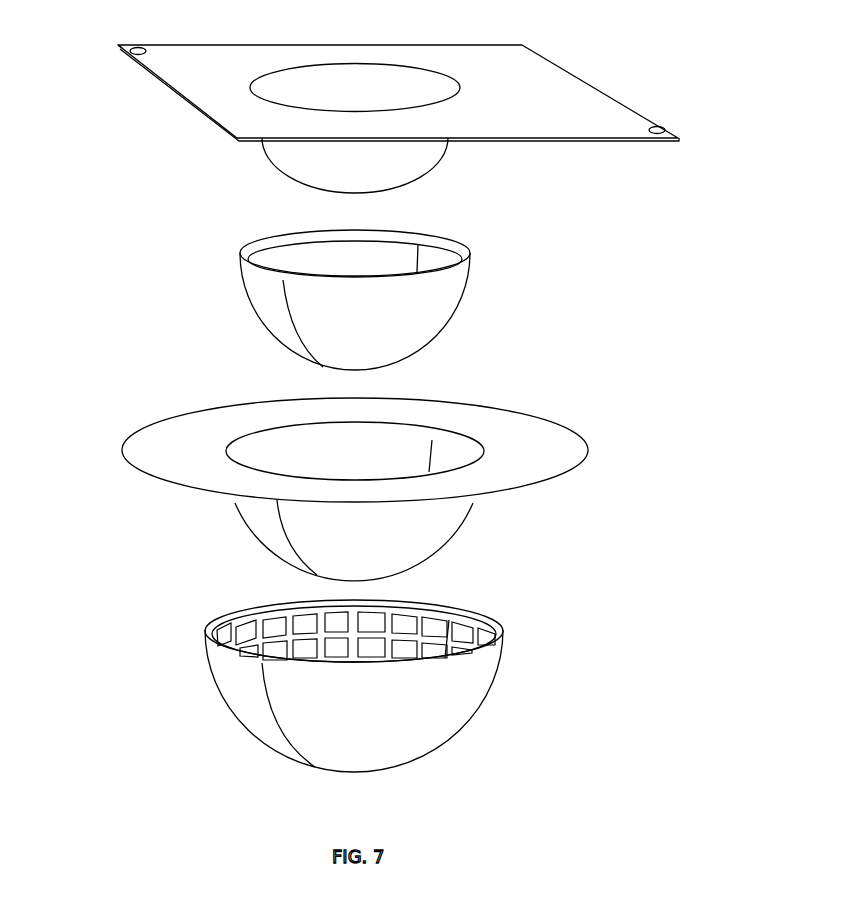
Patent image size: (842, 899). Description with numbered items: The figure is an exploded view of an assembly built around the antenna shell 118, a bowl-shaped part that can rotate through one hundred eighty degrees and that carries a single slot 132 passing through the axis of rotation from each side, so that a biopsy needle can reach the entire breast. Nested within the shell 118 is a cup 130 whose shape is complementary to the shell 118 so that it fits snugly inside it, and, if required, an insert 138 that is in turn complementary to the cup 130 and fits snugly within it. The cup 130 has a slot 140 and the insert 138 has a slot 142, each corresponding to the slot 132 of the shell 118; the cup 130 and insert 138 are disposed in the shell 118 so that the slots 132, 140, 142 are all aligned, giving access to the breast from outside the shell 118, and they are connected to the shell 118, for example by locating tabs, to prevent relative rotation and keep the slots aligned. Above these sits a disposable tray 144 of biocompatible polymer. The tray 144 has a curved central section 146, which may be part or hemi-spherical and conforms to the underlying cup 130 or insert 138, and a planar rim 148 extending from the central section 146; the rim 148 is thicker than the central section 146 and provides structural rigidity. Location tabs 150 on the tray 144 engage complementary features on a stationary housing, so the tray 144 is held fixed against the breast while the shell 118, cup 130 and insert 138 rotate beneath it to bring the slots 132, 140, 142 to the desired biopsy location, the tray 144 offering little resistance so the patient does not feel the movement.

The shell 118 is at (203, 667).
The cup 130 is at (123, 463).
The slot 132 is at (262, 713).
The insert 138 is at (242, 298).
The slot 140 is at (278, 533).
The slot 142 is at (287, 327).
The disposable tray 144 is at (155, 83).
The central section 146 is at (290, 155).
The planar rim 148 is at (570, 93).
The location tabs 150 is at (670, 127).